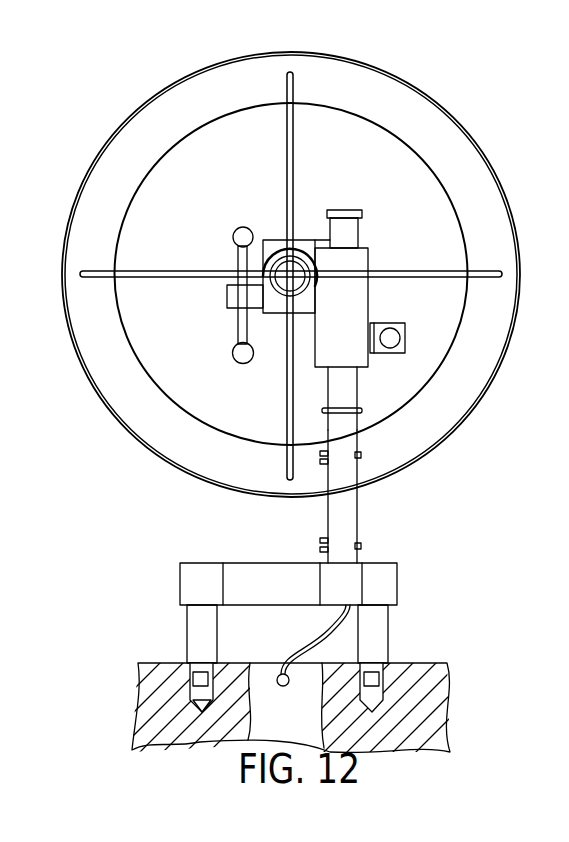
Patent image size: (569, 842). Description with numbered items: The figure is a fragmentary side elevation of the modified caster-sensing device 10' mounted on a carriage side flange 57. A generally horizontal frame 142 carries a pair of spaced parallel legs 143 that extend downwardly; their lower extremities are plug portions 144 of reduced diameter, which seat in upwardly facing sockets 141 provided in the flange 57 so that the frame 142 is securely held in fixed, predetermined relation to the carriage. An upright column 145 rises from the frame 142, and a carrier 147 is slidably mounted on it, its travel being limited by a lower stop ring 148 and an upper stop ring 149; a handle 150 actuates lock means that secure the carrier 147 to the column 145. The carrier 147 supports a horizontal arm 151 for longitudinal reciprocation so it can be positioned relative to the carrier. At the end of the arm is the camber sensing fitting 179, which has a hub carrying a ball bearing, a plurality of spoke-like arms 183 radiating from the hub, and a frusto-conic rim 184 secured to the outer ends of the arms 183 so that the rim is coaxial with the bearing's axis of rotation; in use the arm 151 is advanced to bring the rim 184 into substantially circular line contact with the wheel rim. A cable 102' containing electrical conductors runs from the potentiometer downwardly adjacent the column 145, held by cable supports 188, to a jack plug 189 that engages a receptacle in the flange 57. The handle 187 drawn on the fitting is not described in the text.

The modified device for sensing caster 10' is at (293, 274).
The camber sensing fitting 179 is at (556, 205).
The frusto-conic rim 184 is at (437, 128).
The spoke-like arms 183 is at (320, 129).
The handle with clamp 187 is at (279, 254).
The horizontal arm 151 is at (291, 276).
The carrier 147 is at (355, 295).
The upper stop ring 149 is at (397, 222).
The handle 150 is at (396, 341).
The lower stop ring 148 is at (375, 403).
The upright column 145 is at (345, 517).
The cable supports 188 is at (380, 458).
The frame 142 is at (279, 595).
The legs 143 is at (192, 622).
The plug portions 144 is at (195, 692).
The sockets 141 is at (199, 714).
The jack plug 189 is at (288, 686).
The cable 102' is at (296, 639).
The side flange 57 is at (420, 684).